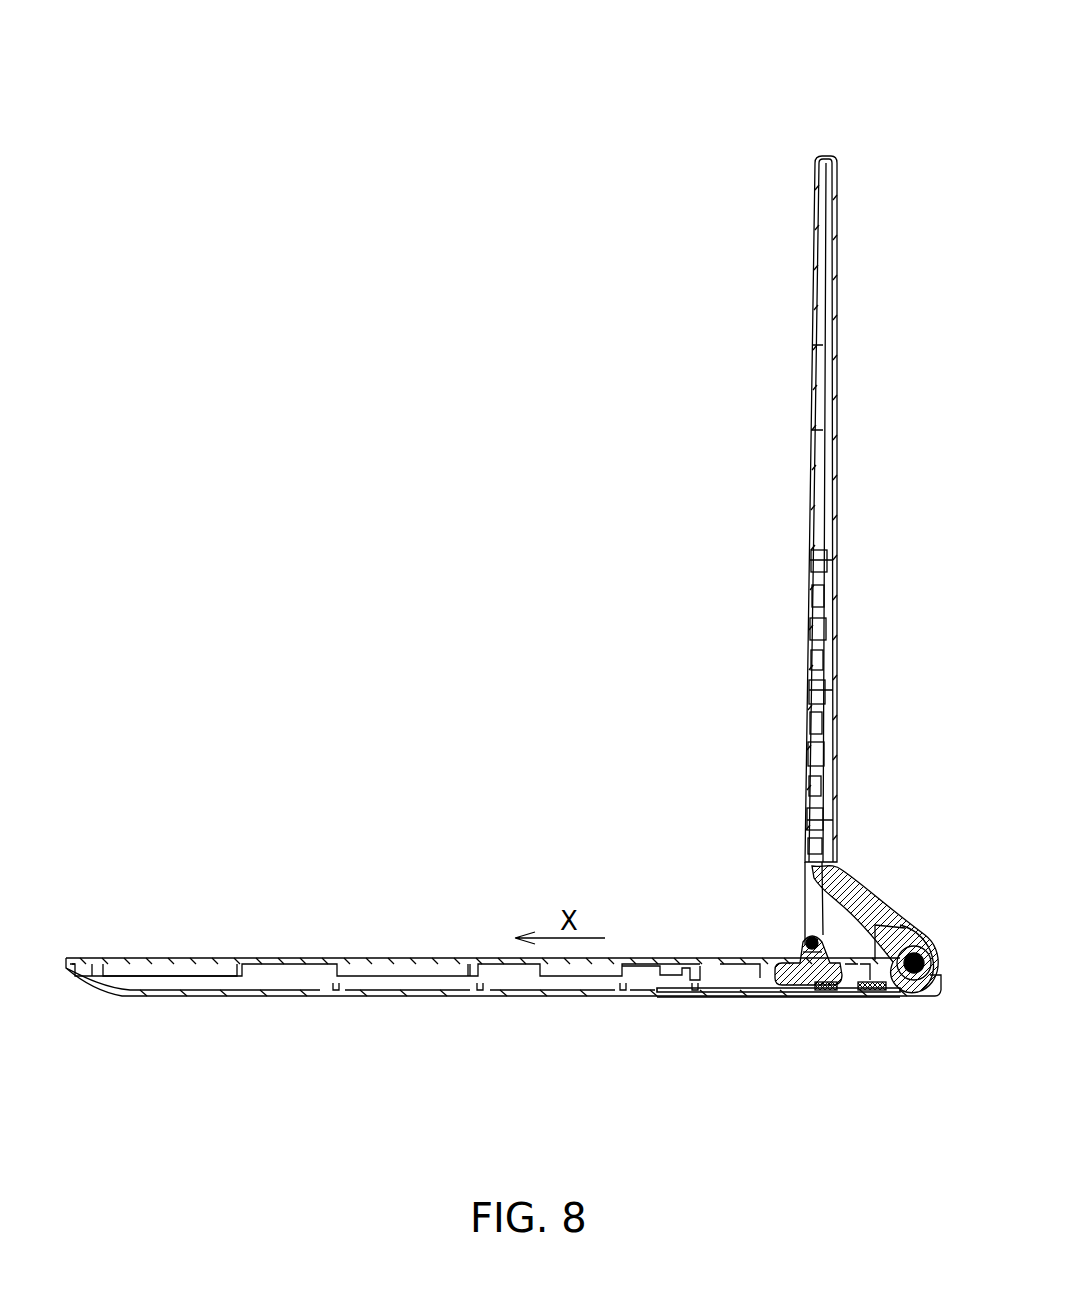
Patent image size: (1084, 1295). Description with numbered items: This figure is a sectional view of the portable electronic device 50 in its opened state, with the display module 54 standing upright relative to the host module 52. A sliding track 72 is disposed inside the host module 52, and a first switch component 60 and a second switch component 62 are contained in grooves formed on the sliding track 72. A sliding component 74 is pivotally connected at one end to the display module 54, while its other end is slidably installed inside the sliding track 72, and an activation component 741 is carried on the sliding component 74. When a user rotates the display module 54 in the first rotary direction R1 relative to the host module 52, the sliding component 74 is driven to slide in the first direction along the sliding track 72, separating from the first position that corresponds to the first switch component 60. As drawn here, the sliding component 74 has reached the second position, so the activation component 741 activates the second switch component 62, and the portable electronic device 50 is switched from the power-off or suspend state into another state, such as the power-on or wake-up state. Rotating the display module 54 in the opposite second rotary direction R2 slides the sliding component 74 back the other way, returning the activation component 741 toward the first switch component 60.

The portable electronic device 50 is at (358, 258).
The host module 52 is at (283, 947).
The display module 54 is at (842, 546).
The first switch component 60 is at (873, 990).
The second switch component 62 is at (826, 990).
The sliding track 72 is at (722, 978).
The sliding component 74 is at (790, 968).
The activation component 741 is at (811, 975).
The first rotary direction R1 is at (876, 104).
The second rotary direction R2 is at (875, 158).